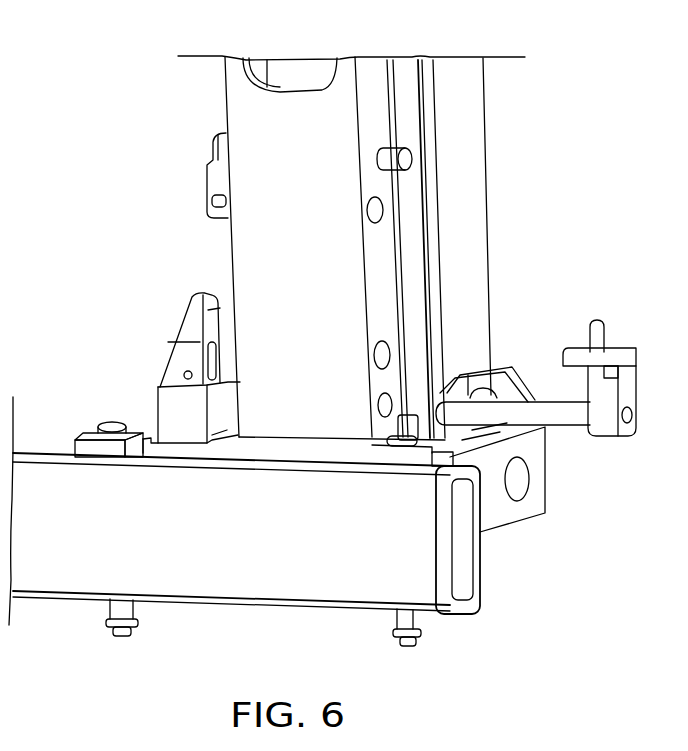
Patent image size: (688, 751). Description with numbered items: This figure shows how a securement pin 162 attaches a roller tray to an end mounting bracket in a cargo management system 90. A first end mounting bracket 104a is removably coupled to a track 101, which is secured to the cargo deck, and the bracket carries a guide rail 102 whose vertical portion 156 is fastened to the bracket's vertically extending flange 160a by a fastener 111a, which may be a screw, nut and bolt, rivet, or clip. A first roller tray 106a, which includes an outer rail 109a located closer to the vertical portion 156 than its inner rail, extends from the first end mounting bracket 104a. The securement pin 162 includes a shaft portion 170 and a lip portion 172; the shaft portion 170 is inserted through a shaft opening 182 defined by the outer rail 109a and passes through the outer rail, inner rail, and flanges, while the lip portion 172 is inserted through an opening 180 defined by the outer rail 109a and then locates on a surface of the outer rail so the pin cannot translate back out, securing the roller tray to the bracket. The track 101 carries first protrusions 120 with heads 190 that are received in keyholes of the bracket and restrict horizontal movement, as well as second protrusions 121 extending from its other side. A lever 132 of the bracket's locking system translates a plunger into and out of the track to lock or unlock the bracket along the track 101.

The cargo management system 90 is at (100, 629).
The track 101 is at (161, 550).
The guide rail 102 is at (477, 167).
The first end mounting bracket 104a is at (340, 455).
The first roller tray 106a is at (299, 189).
The outer rail 109a is at (365, 90).
The fastener 111a is at (500, 367).
The first protrusion 120 is at (95, 425).
The second protrusion 121 is at (430, 630).
The lever 132 is at (188, 322).
The vertical portion 156 is at (482, 230).
The vertically extending flange 160a is at (495, 510).
The securement pin 162 is at (593, 450).
The shaft portion 170 is at (567, 415).
The lip portion 172 is at (582, 338).
The opening 180 is at (392, 336).
The shaft opening 182 is at (400, 396).
The head 190 is at (124, 426).